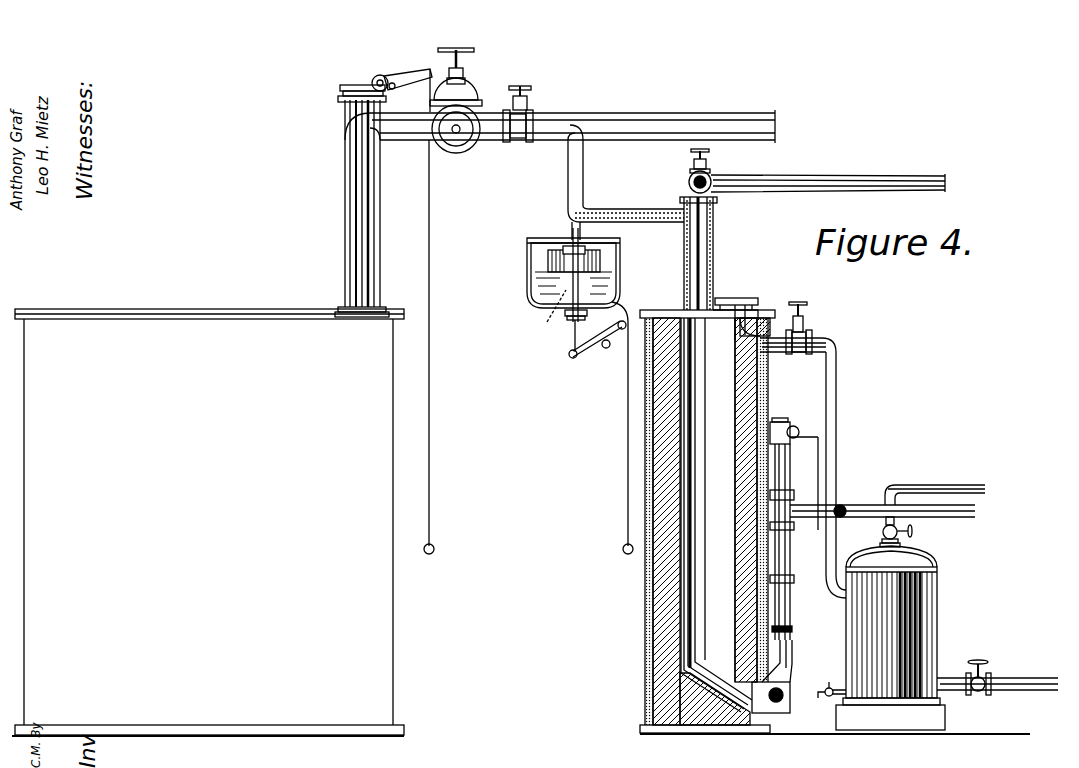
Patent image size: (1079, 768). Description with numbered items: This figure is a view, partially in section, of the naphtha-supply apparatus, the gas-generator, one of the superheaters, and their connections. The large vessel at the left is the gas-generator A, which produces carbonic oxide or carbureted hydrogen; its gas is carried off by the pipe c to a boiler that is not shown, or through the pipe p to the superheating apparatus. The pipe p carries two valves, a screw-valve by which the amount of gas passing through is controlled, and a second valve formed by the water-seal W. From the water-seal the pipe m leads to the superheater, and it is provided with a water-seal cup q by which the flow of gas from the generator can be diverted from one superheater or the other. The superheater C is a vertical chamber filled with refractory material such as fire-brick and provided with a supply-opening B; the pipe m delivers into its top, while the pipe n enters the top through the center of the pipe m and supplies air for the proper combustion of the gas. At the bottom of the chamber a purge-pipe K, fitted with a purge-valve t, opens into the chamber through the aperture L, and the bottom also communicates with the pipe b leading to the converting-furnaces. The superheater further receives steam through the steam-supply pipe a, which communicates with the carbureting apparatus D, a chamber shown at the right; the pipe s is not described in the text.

The gas-generator A is at (208, 410).
The pipe c is at (560, 301).
The pipe p is at (584, 167).
The pipe m is at (626, 215).
The pipe n is at (820, 229).
The water-seal W is at (566, 391).
The water-seal cup q is at (549, 317).
The supply-opening B is at (741, 307).
The superheater C is at (835, 522).
The purge-valve t is at (794, 465).
The purge-pipe K is at (790, 542).
The steam-supply pipe a is at (806, 450).
The steam pipe s is at (941, 488).
The pipe b is at (874, 593).
The carbureting apparatus D is at (940, 622).
The aperture L is at (790, 706).